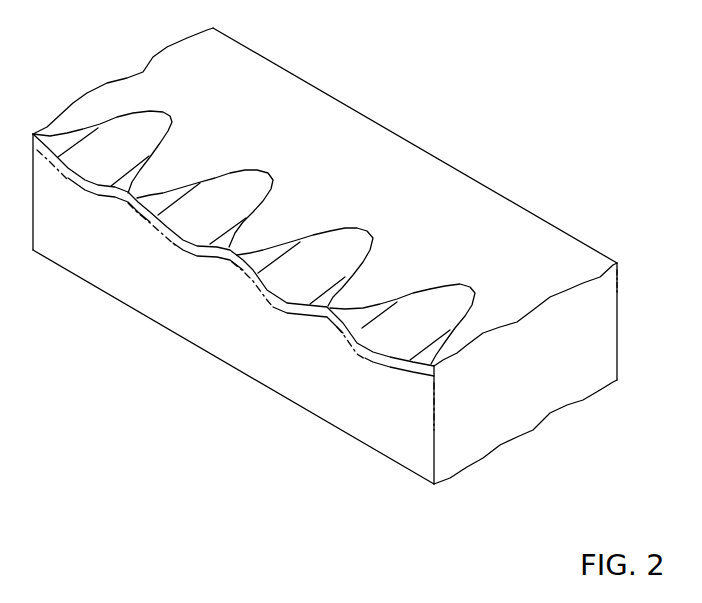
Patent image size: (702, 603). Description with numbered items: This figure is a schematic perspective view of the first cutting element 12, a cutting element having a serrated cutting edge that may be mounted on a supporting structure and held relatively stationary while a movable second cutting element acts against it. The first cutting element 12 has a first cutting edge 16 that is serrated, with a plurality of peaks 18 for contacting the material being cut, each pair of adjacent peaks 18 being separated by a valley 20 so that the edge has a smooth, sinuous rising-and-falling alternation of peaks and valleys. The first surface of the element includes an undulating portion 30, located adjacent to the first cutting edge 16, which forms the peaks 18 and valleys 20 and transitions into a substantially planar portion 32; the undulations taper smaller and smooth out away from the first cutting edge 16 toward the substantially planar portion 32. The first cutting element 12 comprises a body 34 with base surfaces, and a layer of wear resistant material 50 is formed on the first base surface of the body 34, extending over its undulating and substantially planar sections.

The first cutting element 12 is at (322, 257).
The first cutting edge 16 is at (262, 270).
The peaks 18 is at (124, 193).
The valley 20 is at (173, 237).
The undulating portion 30 is at (370, 282).
The substantially planar portion 32 is at (460, 187).
The body 34 is at (295, 377).
The layer of wear resistant material 50 is at (348, 331).